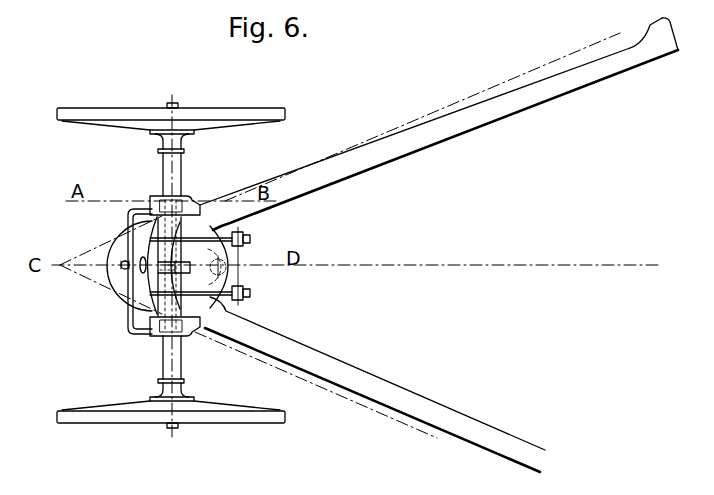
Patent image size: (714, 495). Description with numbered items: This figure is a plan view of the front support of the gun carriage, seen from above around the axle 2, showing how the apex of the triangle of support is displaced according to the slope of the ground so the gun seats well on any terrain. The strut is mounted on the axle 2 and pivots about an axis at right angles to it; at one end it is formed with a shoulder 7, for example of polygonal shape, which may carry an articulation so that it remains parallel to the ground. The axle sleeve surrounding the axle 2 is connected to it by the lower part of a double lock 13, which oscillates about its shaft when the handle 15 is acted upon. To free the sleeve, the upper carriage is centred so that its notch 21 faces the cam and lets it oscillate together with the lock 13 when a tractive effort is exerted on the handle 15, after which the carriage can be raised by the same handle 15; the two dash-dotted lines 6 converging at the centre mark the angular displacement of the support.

The axle 2 is at (175, 171).
The double lock 13 is at (152, 201).
The handle 15 is at (140, 322).
The shoulder 7 is at (112, 274).
The cone axis lines 6 is at (111, 265).
The notch 21 is at (186, 265).